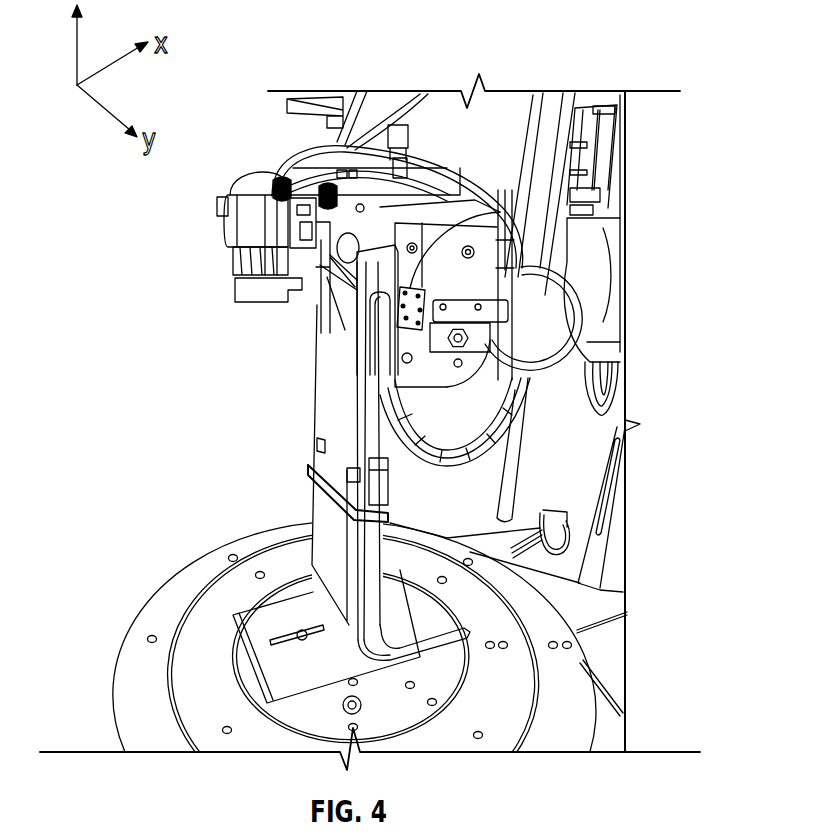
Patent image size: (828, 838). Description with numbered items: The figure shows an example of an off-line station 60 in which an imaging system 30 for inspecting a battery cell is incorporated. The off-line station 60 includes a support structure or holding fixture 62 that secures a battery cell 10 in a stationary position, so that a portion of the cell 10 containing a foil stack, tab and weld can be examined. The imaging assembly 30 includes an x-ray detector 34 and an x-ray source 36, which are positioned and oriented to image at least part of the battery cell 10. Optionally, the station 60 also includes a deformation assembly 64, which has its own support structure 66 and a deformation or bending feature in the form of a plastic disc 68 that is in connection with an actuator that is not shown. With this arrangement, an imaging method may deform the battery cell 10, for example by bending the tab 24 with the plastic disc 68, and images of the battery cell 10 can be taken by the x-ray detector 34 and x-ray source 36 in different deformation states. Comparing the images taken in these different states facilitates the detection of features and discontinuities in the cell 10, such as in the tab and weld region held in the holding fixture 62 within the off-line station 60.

The battery cell 10 is at (347, 392).
The tab 24 is at (348, 258).
The imaging system 30 is at (370, 203).
The x-ray detector 34 is at (242, 226).
The x-ray source 36 is at (503, 262).
The off-line station 60 is at (531, 64).
The holding fixture 62 is at (263, 655).
The deformation assembly 64 is at (288, 275).
The support structure 66 is at (363, 328).
The plastic disc 68 is at (285, 256).